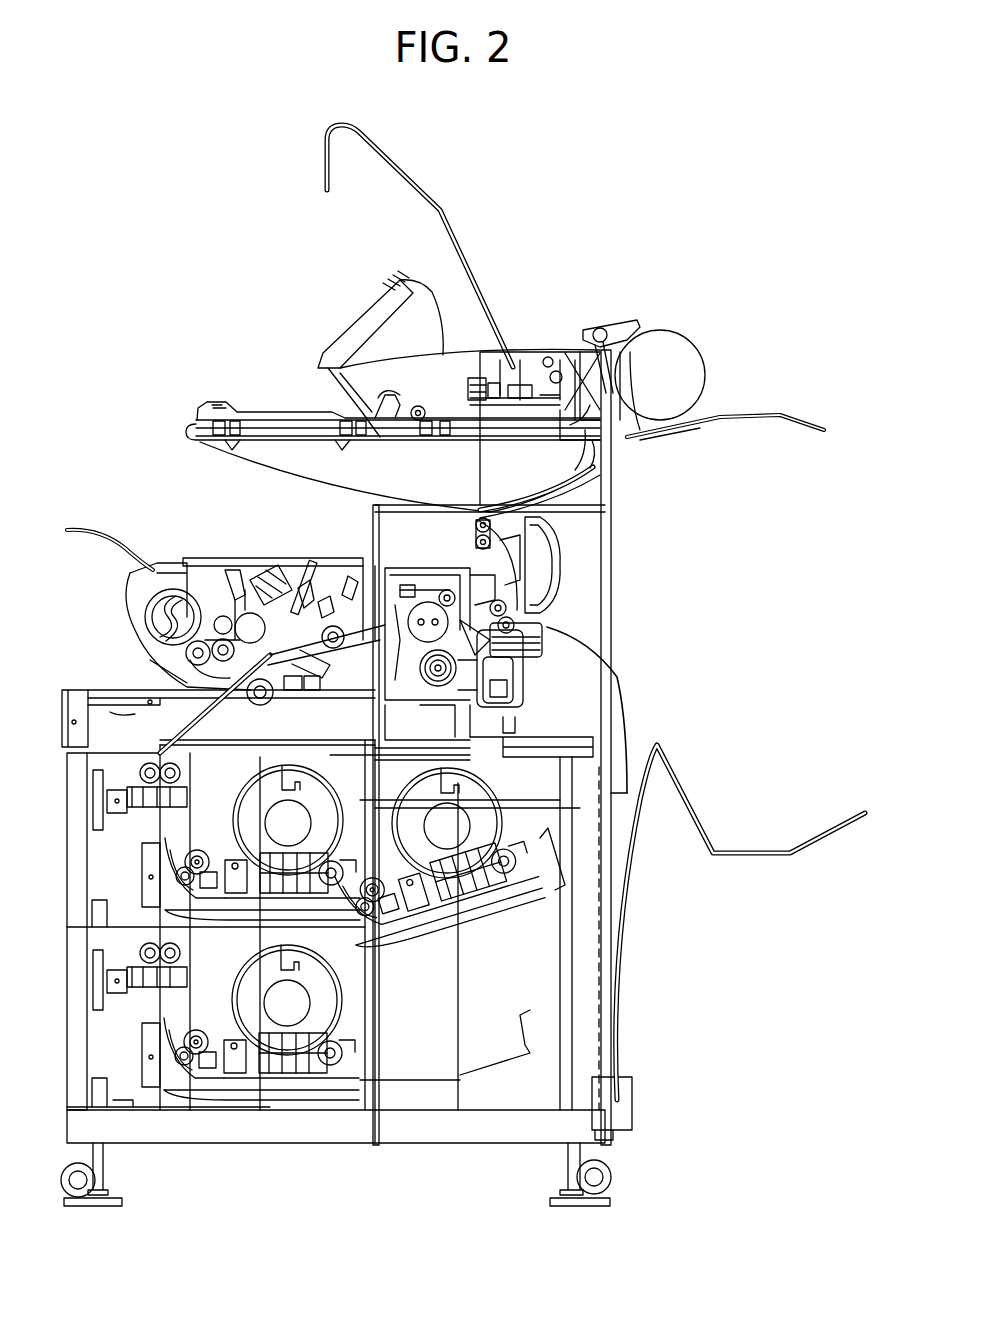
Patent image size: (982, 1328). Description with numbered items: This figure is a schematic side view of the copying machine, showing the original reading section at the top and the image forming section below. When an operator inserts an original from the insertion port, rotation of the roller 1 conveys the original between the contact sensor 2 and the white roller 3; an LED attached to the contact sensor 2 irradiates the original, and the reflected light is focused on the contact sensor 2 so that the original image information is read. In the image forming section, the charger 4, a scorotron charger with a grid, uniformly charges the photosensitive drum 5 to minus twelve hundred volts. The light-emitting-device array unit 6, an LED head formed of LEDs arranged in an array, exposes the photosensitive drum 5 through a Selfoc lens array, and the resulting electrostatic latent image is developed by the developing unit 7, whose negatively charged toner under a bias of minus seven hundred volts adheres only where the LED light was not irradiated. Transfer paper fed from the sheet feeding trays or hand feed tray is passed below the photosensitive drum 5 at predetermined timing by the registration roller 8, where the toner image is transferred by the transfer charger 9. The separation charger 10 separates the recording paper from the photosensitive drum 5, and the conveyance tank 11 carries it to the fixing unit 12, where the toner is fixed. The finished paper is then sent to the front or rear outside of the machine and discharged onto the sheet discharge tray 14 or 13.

The roller 1 is at (413, 405).
The contact sensor 2 is at (480, 380).
The white roller 3 is at (490, 453).
The charger 4 is at (310, 596).
The photosensitive drum 5 is at (313, 610).
The light-emitting-device array unit 6 is at (263, 600).
The developing unit 7 is at (240, 597).
The registration roller 8 is at (260, 702).
The transfer charger 9 is at (293, 690).
The separation charger 10 is at (310, 690).
The conveyance tank 11 is at (340, 647).
The fixing unit 12 is at (547, 633).
The sheet discharge tray 13 is at (560, 598).
The sheet discharge tray 14 is at (468, 532).